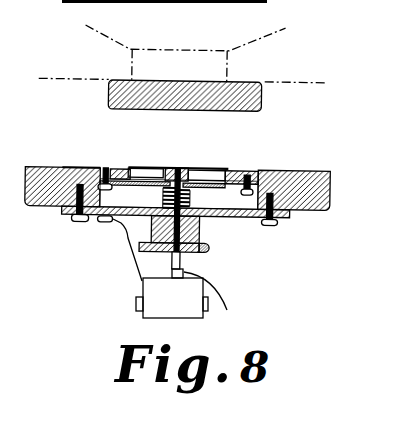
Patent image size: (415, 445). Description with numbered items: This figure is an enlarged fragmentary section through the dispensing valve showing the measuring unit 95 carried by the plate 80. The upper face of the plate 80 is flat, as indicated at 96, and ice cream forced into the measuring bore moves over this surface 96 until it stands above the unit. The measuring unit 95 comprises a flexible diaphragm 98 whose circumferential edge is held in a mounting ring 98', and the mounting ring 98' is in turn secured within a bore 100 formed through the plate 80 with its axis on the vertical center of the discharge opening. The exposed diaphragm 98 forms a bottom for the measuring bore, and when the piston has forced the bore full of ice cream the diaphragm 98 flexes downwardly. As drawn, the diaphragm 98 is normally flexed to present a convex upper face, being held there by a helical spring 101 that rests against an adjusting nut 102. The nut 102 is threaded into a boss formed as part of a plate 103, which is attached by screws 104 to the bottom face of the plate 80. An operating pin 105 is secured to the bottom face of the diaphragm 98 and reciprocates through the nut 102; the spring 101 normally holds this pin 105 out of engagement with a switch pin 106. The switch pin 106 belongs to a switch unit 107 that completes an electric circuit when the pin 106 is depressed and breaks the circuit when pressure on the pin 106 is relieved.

The plate 80 is at (44, 169).
The measuring unit 95 is at (246, 154).
The flat upper face 96 is at (93, 167).
The flexible diaphragm 98 is at (178, 144).
The mounting ring 98' is at (262, 165).
The bore 100 is at (111, 169).
The helical spring 101 is at (191, 205).
The adjusting nut 102 is at (209, 249).
The plate 103 is at (250, 217).
The screws 104 is at (307, 172).
The operating pin 105 is at (170, 258).
The switch pin 106 is at (227, 310).
The switch unit 107 is at (163, 305).